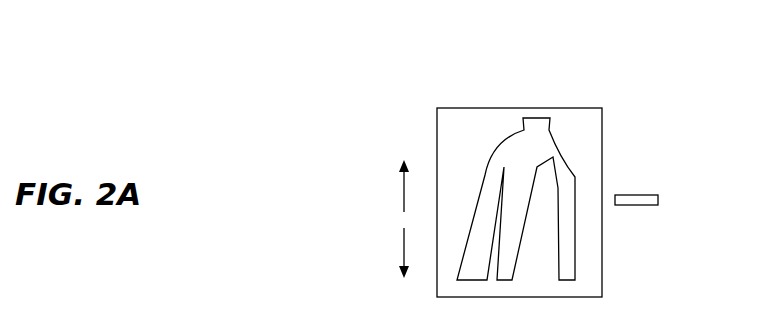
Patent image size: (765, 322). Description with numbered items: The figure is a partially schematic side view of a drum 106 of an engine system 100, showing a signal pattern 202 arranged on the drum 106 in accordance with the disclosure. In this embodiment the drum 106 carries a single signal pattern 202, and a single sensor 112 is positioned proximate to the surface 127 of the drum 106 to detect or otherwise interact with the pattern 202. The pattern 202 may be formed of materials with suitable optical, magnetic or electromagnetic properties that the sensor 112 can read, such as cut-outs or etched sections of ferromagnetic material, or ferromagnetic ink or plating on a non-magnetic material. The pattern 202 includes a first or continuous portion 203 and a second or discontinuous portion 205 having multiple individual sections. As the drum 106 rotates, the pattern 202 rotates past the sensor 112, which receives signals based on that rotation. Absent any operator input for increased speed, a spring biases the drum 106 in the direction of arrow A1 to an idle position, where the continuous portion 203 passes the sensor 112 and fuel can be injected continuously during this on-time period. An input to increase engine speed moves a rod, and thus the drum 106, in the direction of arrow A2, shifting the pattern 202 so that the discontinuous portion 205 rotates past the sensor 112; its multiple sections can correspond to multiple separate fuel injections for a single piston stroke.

The garment processing system 100 is at (660, 84).
The drum 106 is at (573, 108).
The surface 127 is at (465, 118).
The continuous portion 203 is at (500, 129).
The signal pattern 202 is at (573, 145).
The sensor 112 is at (652, 194).
The discontinuous portion 205 is at (592, 272).
The arrow A1 is at (403, 252).
The arrow A2 is at (403, 192).